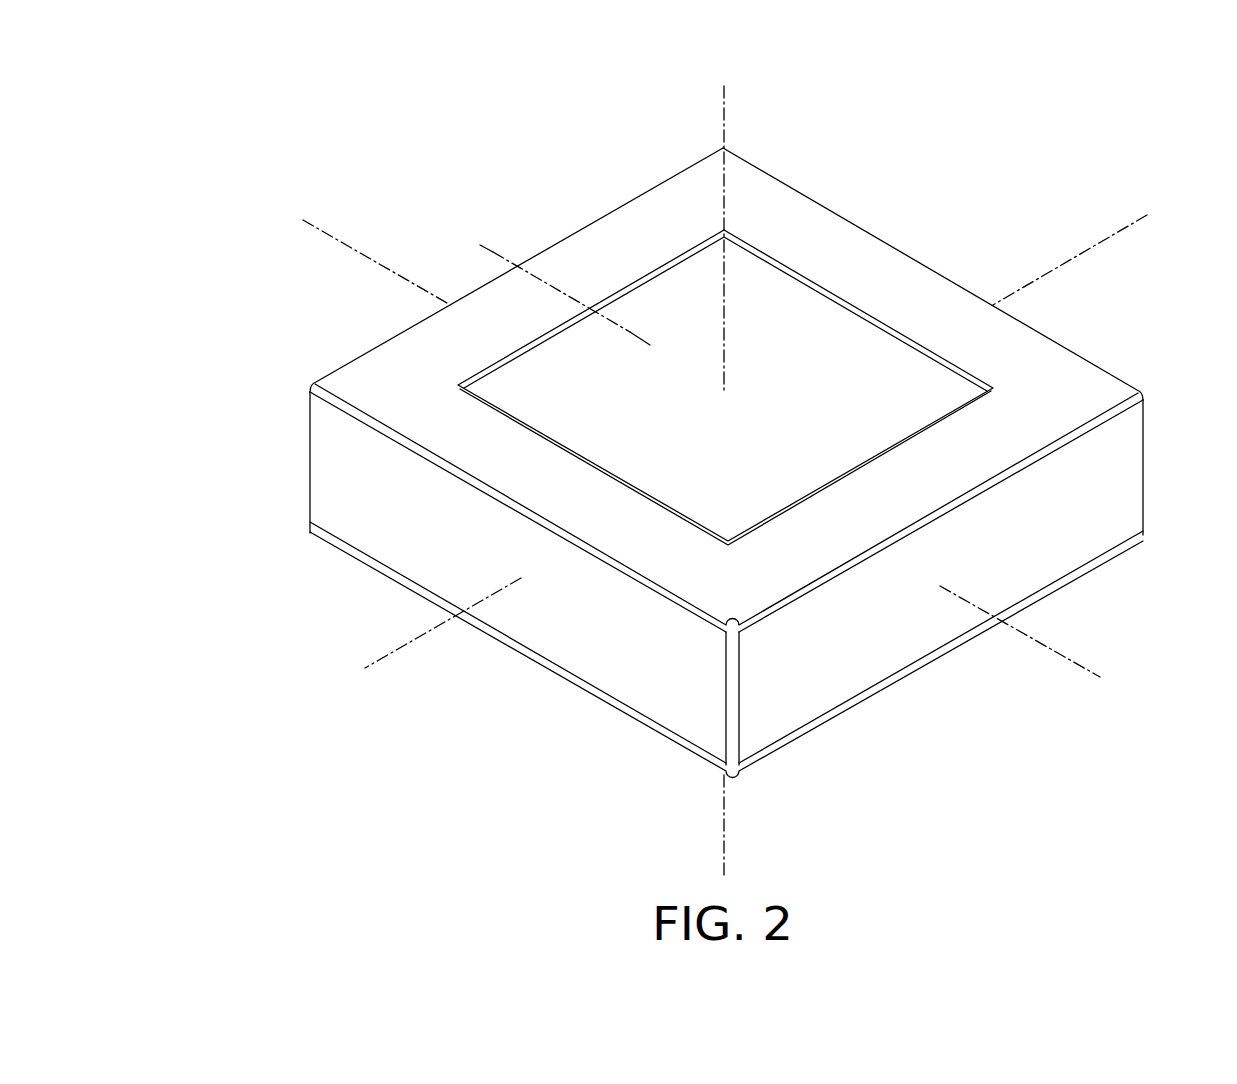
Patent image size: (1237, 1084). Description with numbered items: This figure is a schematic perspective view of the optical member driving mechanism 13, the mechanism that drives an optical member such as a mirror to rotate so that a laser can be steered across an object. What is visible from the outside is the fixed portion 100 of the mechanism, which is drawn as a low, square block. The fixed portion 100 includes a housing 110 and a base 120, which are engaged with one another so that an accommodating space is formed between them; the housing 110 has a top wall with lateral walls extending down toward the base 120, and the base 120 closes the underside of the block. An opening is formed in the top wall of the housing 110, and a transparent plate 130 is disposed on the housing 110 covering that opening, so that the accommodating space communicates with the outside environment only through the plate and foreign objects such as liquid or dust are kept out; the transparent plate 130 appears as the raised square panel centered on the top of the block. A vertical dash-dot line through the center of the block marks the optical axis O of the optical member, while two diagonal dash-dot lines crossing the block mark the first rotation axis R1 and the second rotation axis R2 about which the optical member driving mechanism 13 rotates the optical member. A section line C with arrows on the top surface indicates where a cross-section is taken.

The optical member driving mechanism 13 is at (210, 103).
The fixed portion 100 is at (309, 454).
The housing 110 is at (1128, 473).
The base 120 is at (1143, 538).
The transparent plate 130 is at (815, 332).
The optical axis O is at (724, 466).
The first rotation axis R1 is at (340, 240).
The second rotation axis R2 is at (1082, 253).
The section line C- C is at (474, 254).